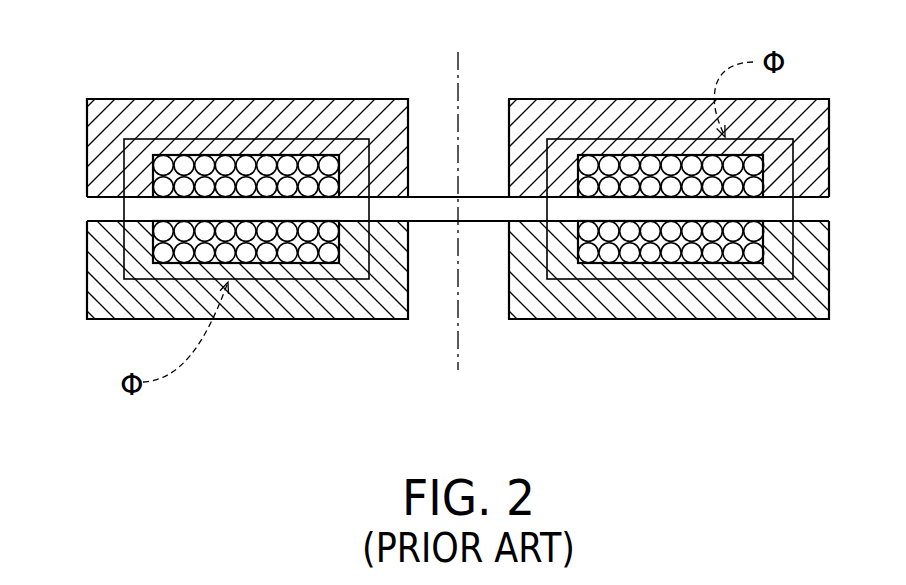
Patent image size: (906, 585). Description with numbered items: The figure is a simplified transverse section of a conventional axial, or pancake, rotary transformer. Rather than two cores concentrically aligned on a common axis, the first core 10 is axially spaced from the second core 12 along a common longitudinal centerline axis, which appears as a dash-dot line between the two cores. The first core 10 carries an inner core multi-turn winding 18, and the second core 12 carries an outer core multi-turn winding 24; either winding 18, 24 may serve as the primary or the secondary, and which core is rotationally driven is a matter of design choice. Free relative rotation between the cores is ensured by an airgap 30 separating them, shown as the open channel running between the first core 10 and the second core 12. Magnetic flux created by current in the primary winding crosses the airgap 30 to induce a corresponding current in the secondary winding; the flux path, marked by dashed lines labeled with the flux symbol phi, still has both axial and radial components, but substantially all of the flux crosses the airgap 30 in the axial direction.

The first core 10 is at (442, 73).
The second core 12 is at (478, 377).
The inner core multi-turn winding 18 is at (205, 164).
The outer core multi-turn winding 24 is at (307, 252).
The airgap 30 is at (97, 205).